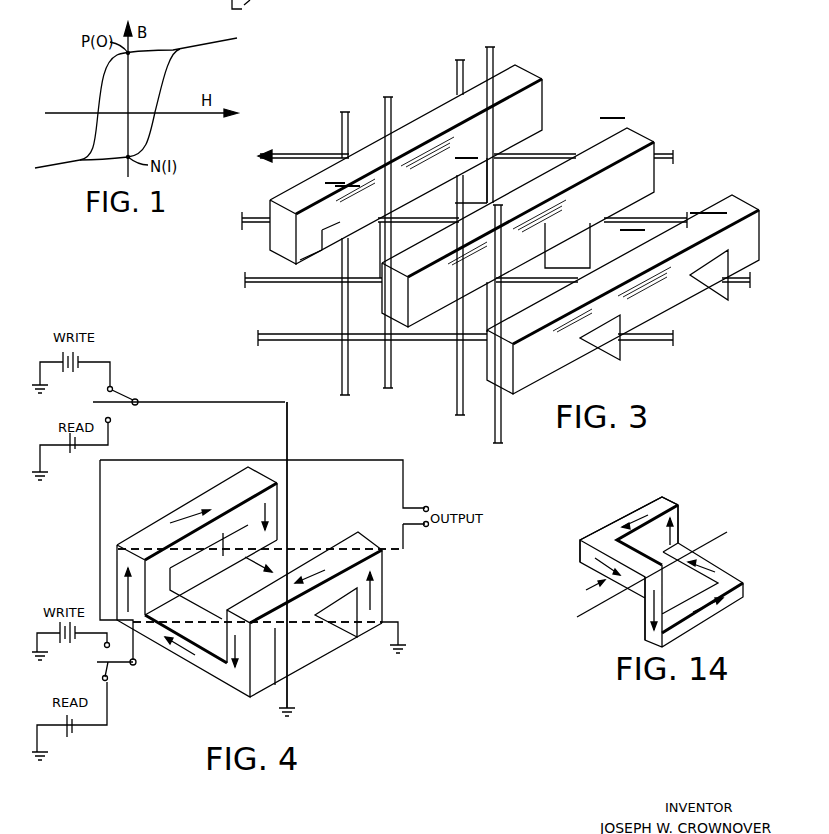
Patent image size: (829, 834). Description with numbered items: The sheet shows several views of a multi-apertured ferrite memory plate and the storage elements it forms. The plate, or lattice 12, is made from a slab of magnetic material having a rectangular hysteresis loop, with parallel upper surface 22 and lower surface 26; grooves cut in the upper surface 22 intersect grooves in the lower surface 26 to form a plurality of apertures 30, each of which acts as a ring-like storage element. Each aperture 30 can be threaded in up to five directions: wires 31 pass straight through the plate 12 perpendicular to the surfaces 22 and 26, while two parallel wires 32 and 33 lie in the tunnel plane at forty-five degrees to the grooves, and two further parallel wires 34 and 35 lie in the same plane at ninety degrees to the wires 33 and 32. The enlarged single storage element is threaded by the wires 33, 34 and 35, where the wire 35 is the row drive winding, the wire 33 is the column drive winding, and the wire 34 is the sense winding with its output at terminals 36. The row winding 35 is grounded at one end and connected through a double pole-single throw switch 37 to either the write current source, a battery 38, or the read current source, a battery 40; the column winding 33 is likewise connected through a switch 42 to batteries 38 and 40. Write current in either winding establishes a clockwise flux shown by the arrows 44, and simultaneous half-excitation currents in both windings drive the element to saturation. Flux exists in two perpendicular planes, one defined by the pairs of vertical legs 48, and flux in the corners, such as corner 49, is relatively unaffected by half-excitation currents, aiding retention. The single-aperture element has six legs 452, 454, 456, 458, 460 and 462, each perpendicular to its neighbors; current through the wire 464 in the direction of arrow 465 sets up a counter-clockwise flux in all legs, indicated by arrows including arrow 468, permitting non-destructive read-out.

In FIG. 3, the multi-apertured plate 12 is at (550, 116).
In FIG. 3, the upper surface 22 is at (624, 352).
In FIG. 3, the lower surface 26 is at (628, 141).
In FIG. 3, the aperture 30 is at (376, 253).
In FIG. 3, the wire 31 is at (414, 88).
In FIG. 3, the wire 32 is at (345, 372).
In FIG. 3, the column drive winding 33 is at (458, 408).
In FIG. 4, the column drive winding 33 is at (288, 447).
In FIG. 3, the sense winding 34 is at (258, 222).
In FIG. 4, the sense winding 34 is at (295, 551).
In FIG. 3, the row drive winding 35 is at (275, 283).
In FIG. 4, the row drive winding 35 is at (325, 622).
In FIG. 4, the terminals 36 is at (428, 497).
In FIG. 4, the double pole-single throw switch 37 is at (108, 676).
In FIG. 4, the write current source 38 is at (79, 366).
In FIG. 4, the read current source 40 is at (73, 450).
In FIG. 4, the double pole-single throw switch 42 is at (118, 401).
In FIG. 4, the arrows 44 is at (187, 515).
In FIG. 4, the vertical legs 48 is at (232, 540).
In FIG. 4, the corner 49 is at (248, 702).
In FIG. 14, the leg 452 is at (655, 502).
In FIG. 14, the leg 454 is at (580, 550).
In FIG. 14, the leg 456 is at (645, 610).
In FIG. 14, the leg 458 is at (688, 626).
In FIG. 14, the leg 460 is at (712, 566).
In FIG. 14, the leg 462 is at (680, 523).
In FIG. 14, the wire 464 is at (580, 617).
In FIG. 14, the arrow 465 is at (587, 590).
In FIG. 14, the flux arrow 468 is at (633, 517).